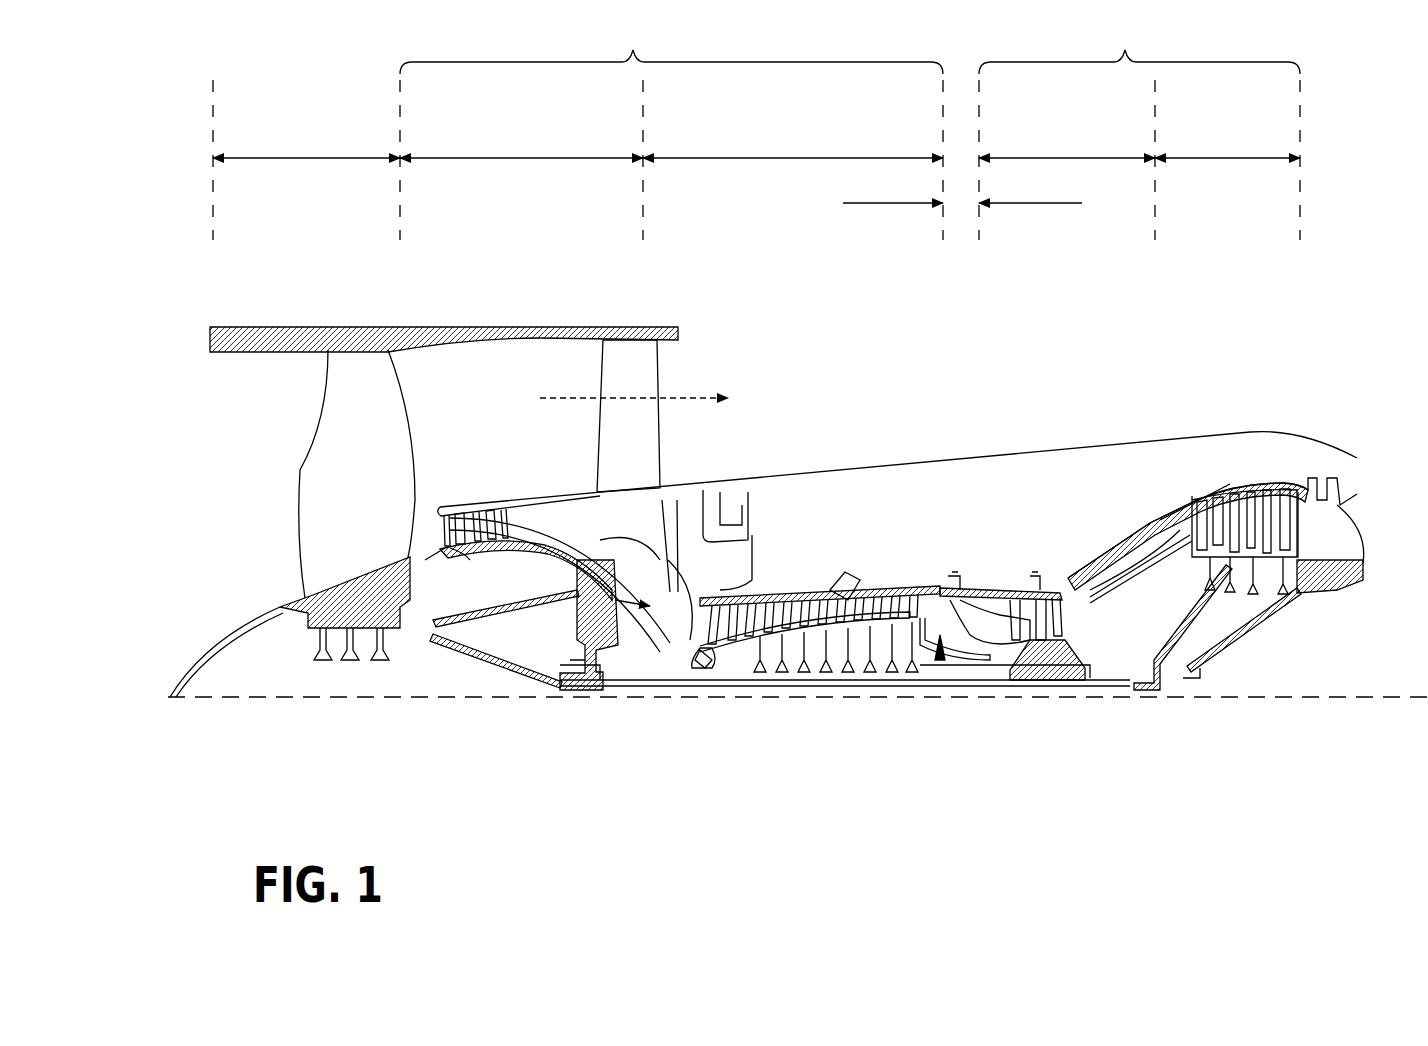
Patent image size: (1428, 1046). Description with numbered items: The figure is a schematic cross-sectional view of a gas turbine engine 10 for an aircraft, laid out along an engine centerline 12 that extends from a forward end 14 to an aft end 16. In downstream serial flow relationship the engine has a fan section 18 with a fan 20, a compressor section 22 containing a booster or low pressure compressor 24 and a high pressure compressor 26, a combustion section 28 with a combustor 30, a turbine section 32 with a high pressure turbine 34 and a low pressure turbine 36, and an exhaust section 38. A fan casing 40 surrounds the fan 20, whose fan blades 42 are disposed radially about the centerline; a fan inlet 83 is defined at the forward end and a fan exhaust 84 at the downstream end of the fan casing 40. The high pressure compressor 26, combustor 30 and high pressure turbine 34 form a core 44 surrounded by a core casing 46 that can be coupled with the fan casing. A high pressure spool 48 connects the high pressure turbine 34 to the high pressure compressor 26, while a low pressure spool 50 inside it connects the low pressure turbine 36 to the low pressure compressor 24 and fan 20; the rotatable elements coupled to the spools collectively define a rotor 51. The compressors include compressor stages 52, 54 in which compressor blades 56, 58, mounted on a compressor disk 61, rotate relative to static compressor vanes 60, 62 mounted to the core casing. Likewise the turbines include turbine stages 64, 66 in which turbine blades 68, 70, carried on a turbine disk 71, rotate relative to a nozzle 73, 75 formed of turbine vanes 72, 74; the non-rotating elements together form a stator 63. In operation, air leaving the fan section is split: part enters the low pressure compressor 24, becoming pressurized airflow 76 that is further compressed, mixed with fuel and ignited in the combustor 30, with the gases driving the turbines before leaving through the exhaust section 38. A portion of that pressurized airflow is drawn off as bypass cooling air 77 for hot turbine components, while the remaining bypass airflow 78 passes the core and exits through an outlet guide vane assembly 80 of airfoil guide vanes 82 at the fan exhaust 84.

The gas turbine engine 10 is at (1315, 240).
The engine centerline 12 is at (328, 700).
The forward end 14 is at (84, 592).
The aft end 16 is at (1390, 547).
The fan section 18 is at (306, 160).
The fan 20 is at (297, 568).
The compressor section 22 is at (671, 47).
The low pressure compressor 24 is at (521, 160).
The high pressure compressor 26 is at (793, 160).
The combustion section 28 is at (888, 205).
The combustor 30 is at (995, 603).
The turbine section 32 is at (1139, 47).
The high pressure turbine 34 is at (1049, 160).
The low pressure turbine 36 is at (1227, 160).
The exhaust section 38 is at (1377, 500).
The fan casing 40 is at (475, 326).
The fan blades 42 is at (388, 405).
The core 44 is at (930, 500).
The core casing 46 is at (1205, 487).
The high pressure spool 48 is at (968, 656).
The low pressure spool 50 is at (582, 688).
The rotor 51 is at (838, 696).
The compressor stages 52 is at (495, 448).
The compressor stages 54 is at (787, 493).
The compressor blades 56 is at (470, 512).
The compressor blades 58 is at (725, 600).
The compressor vanes 60 is at (445, 515).
The compressor disk 61 is at (465, 553).
The compressor vanes 62 is at (720, 615).
The stator 63 is at (1210, 485).
The turbine stages 64 is at (1092, 524).
The turbine stages 66 is at (1280, 378).
The turbine blades 68 is at (1040, 603).
The turbine blades 70 is at (1283, 495).
The turbine disk 71 is at (1040, 640).
The turbine vanes 72 is at (1020, 603).
The nozzle 73 is at (1003, 578).
The turbine vanes 74 is at (1265, 488).
The nozzle 75 is at (1258, 488).
The pressurized airflow 76 is at (652, 548).
The bypass cooling air 77 is at (823, 582).
The bypass airflow 78 is at (567, 388).
The outlet guide vane assembly 80 is at (680, 449).
The airfoil guide vanes 82 is at (612, 438).
The fan inlet 83 is at (238, 432).
The fan exhaust 84 is at (705, 357).